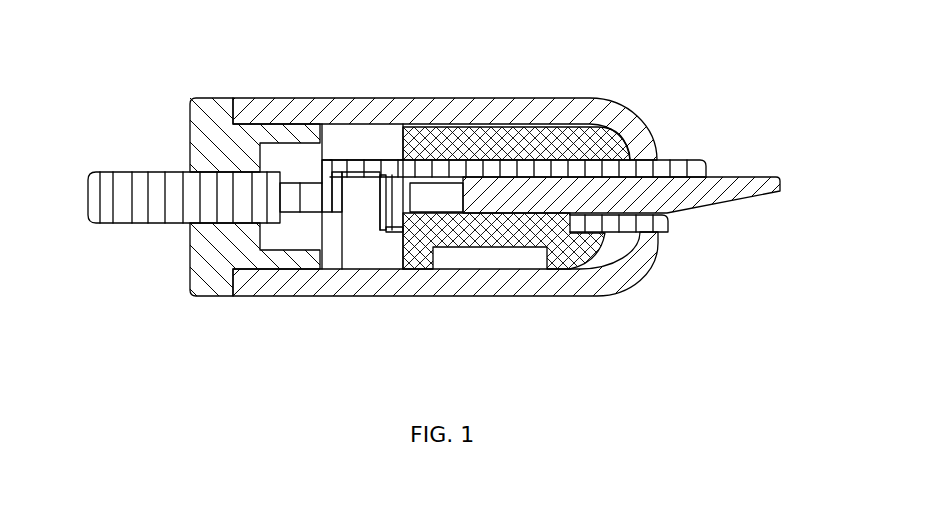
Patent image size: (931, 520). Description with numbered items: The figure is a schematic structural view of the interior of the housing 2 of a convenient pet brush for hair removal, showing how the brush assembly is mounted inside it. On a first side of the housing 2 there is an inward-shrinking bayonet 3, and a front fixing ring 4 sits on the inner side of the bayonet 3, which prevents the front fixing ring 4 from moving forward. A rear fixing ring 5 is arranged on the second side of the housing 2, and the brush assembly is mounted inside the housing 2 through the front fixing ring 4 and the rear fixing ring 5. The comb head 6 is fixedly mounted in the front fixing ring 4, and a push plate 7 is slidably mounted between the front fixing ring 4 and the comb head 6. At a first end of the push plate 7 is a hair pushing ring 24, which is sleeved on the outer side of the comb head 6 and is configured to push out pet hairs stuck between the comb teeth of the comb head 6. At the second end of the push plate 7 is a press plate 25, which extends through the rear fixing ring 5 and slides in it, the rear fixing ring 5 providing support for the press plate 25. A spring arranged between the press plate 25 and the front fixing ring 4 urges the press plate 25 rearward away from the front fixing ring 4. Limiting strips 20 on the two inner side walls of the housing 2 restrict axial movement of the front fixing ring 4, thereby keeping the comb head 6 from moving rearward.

The housing 2 is at (450, 112).
The bayonet 3 is at (633, 240).
The front fixing ring 4 is at (565, 130).
The rear fixing ring 5 is at (210, 120).
The comb head 6 is at (703, 187).
The push plate 7 is at (324, 184).
The limiting strips 20 is at (388, 205).
The hair pushing ring 24 is at (667, 233).
The press plate 25 is at (160, 200).